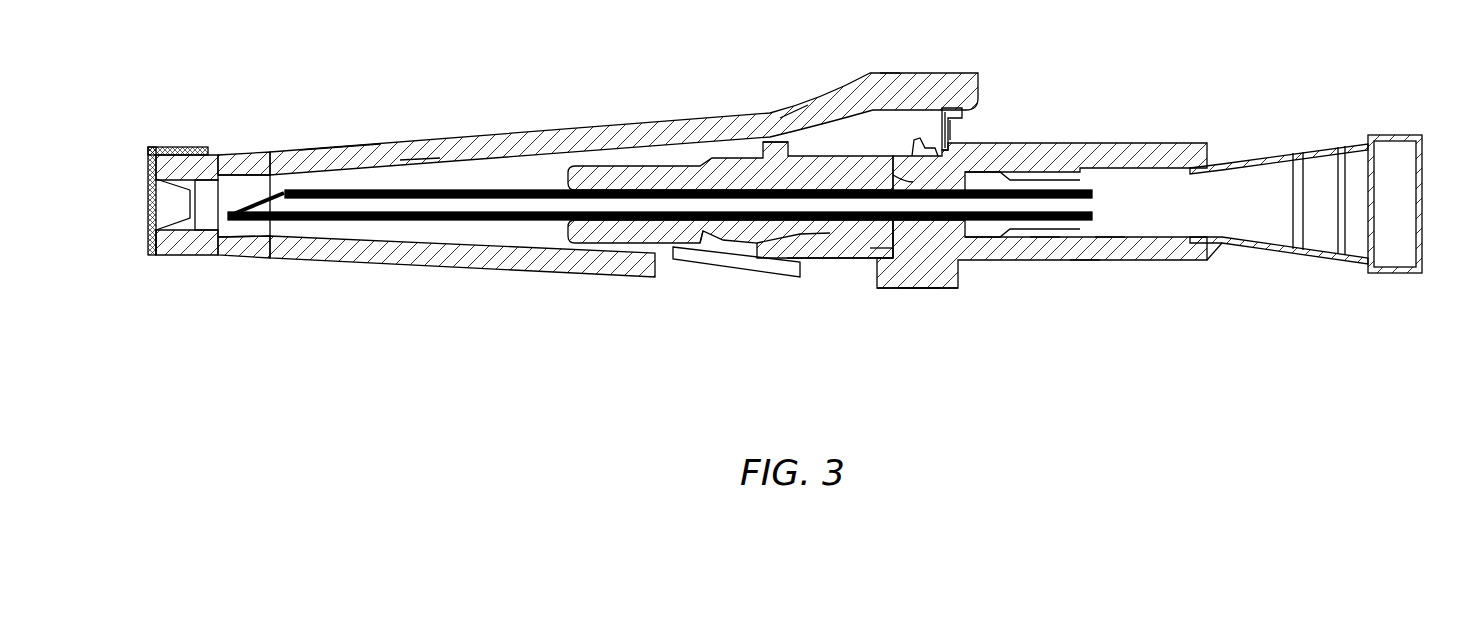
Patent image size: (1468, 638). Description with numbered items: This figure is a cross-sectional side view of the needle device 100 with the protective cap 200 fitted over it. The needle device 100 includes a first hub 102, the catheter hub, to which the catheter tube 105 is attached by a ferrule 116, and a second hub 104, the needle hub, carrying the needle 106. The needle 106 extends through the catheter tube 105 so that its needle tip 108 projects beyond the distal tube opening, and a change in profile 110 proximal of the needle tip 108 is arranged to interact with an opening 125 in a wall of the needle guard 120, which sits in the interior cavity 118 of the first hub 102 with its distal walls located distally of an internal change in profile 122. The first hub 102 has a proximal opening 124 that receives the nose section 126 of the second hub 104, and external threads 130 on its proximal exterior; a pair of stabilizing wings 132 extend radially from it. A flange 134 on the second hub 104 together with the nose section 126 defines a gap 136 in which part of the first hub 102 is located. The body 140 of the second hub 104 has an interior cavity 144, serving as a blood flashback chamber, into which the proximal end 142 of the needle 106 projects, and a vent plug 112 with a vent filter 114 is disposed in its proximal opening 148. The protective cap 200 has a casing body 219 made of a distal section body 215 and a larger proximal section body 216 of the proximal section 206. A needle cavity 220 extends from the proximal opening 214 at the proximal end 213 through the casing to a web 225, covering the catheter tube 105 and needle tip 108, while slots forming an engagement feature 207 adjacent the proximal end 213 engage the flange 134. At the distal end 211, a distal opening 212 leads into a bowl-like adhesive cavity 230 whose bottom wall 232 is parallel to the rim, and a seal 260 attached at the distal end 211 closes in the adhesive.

The needle device 100 is at (1188, 143).
The first hub 102 is at (812, 260).
The second hub 104 is at (918, 290).
The catheter tube 105 is at (443, 224).
The needle 106 is at (282, 247).
The needle tip 108 is at (226, 210).
The change in profile 110 is at (372, 221).
The vent plug 112 is at (1343, 146).
The vent filter 114 is at (1423, 187).
The ferrule 116 is at (668, 252).
The interior cavity 118 is at (808, 226).
The needle guard 120 is at (700, 258).
The internal change in profile 122 is at (768, 140).
The proximal opening 124 is at (945, 248).
The opening 125 is at (890, 265).
The nose section 126 is at (912, 180).
The external threads 130 is at (930, 142).
The stabilizing wings 132 is at (680, 268).
The flange 134 is at (905, 292).
The gap 136 is at (890, 262).
The body 140 is at (1082, 228).
The proximal end 142 is at (1105, 252).
The interior cavity 144 is at (1043, 226).
The proximal opening 148 is at (1222, 246).
The protective cap 200 is at (419, 128).
The proximal section 206 is at (833, 70).
The engagement feature 207 is at (952, 113).
The distal end 211 is at (153, 248).
The distal opening 212 is at (150, 218).
The proximal end 213 is at (958, 105).
The proximal opening 214 is at (958, 121).
The distal section body 215 is at (380, 143).
The proximal section body 216 is at (808, 100).
The casing body 219 is at (518, 132).
The needle cavity 220 is at (243, 195).
The web 225 is at (228, 174).
The adhesive cavity 230 is at (178, 197).
The bottom wall 232 is at (156, 178).
The seal 260 is at (152, 142).